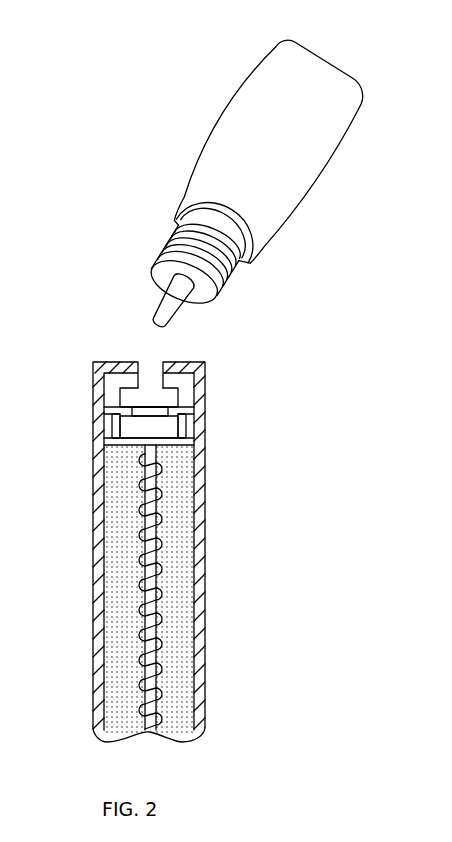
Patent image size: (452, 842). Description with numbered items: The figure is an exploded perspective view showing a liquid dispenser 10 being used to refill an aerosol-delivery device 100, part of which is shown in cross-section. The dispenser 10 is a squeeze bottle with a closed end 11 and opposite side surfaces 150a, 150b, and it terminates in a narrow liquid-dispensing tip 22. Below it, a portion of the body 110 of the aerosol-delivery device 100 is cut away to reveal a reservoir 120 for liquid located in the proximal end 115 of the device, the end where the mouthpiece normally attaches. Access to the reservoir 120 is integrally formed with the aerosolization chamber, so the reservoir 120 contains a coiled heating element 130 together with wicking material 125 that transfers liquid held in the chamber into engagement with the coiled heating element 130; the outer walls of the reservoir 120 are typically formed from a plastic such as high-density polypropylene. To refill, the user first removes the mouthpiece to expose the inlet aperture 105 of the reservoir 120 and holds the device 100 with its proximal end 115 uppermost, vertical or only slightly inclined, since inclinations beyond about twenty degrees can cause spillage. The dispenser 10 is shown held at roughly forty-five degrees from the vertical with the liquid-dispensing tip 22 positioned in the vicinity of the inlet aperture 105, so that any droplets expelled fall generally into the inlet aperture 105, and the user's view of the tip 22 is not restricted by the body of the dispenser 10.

The liquid dispenser 10 is at (300, 236).
The bottle body end 11 is at (348, 62).
The first side surface of bottle 150a is at (198, 132).
The second side surface of bottle 150b is at (327, 201).
The liquid-dispensing tip 22 is at (157, 307).
The aerosol-delivery device 100 is at (236, 737).
The inlet aperture 105 is at (157, 373).
The body 110 is at (95, 602).
The proximal end 115 is at (197, 362).
The reservoir 120 is at (172, 602).
The wicking material 125 is at (118, 500).
The coiled heating element 130 is at (163, 518).